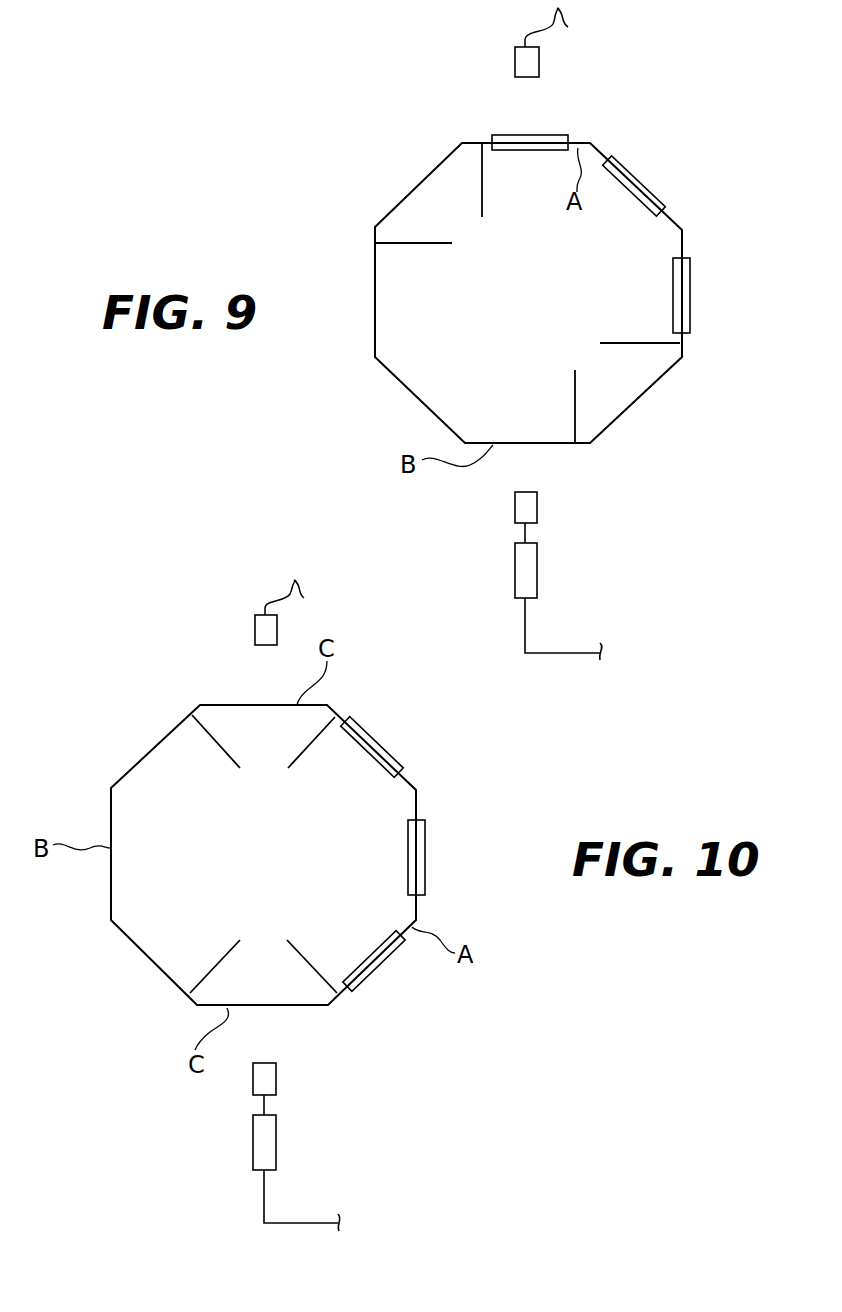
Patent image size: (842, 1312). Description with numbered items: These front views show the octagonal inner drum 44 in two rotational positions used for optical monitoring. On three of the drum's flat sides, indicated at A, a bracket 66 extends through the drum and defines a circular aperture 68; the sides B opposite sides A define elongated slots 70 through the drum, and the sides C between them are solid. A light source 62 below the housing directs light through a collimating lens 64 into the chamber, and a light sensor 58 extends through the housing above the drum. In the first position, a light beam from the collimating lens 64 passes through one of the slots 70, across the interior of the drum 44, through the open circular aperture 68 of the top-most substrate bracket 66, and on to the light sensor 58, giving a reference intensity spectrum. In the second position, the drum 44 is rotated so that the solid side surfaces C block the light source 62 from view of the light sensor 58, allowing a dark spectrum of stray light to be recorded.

In FIG. 9, the inner drum 44 is at (660, 380).
In FIG. 10, the inner drum 44 is at (268, 855).
In FIG. 9, the light sensor 58 is at (515, 63).
In FIG. 10, the light sensor 58 is at (253, 632).
In FIG. 9, the light source 62 is at (538, 568).
In FIG. 10, the light source 62 is at (277, 1141).
In FIG. 9, the collimating lens 64 is at (538, 505).
In FIG. 10, the collimating lens 64 is at (277, 1076).
In FIG. 9, the bracket 66 is at (558, 137).
In FIG. 10, the bracket 66 is at (387, 752).
In FIG. 9, the circular aperture 68 is at (530, 126).
In FIG. 9, the elongated slot 70 is at (525, 433).